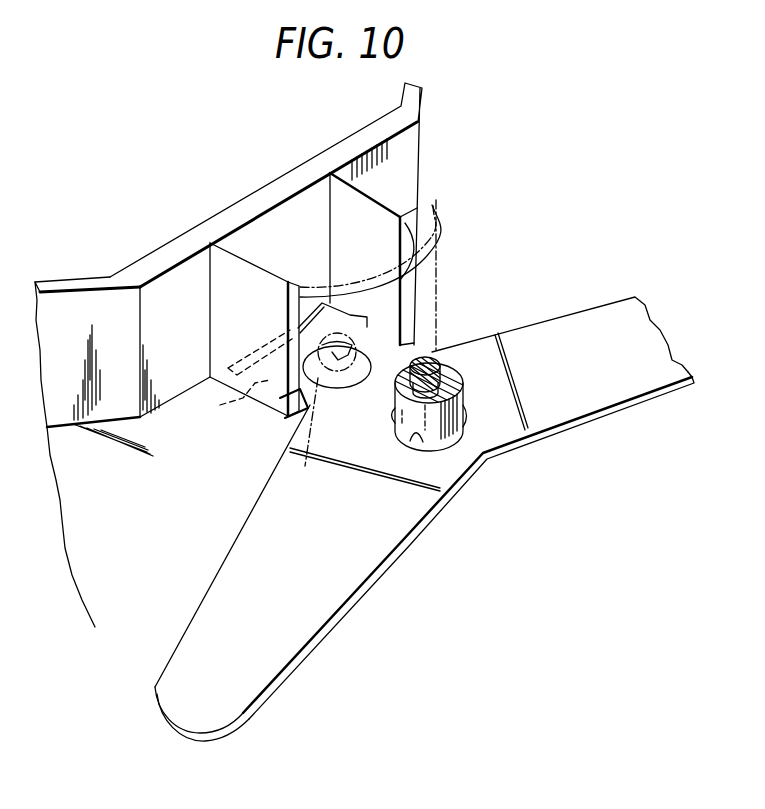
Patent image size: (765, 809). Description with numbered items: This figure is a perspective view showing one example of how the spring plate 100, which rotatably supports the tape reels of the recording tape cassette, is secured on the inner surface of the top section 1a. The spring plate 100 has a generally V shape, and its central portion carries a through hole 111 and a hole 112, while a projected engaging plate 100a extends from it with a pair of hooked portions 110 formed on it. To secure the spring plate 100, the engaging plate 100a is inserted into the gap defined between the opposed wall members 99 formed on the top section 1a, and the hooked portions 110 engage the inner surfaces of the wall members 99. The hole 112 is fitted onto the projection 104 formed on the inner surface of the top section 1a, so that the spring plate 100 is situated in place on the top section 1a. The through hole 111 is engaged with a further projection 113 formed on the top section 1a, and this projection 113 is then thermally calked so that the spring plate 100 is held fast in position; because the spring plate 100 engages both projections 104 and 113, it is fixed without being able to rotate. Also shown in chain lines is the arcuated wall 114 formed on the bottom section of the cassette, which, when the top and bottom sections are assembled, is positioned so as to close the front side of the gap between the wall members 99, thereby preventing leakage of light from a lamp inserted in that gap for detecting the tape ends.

The top section 1a is at (110, 279).
The wall members 99 is at (256, 262).
The spring plate 100 is at (232, 692).
The engaging plate 100a is at (300, 390).
The projection 104 is at (463, 464).
The hooked portions 110 is at (352, 312).
The through hole 111 is at (313, 437).
The hole 112 is at (410, 440).
The projection 113 is at (340, 362).
The arcuated wall 114 is at (440, 243).